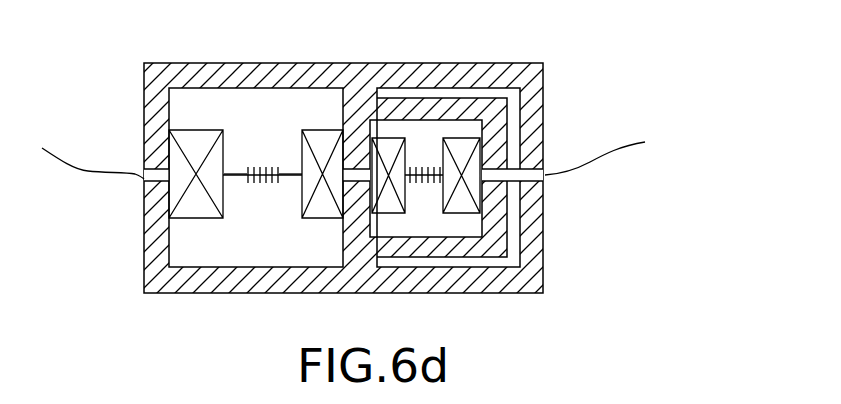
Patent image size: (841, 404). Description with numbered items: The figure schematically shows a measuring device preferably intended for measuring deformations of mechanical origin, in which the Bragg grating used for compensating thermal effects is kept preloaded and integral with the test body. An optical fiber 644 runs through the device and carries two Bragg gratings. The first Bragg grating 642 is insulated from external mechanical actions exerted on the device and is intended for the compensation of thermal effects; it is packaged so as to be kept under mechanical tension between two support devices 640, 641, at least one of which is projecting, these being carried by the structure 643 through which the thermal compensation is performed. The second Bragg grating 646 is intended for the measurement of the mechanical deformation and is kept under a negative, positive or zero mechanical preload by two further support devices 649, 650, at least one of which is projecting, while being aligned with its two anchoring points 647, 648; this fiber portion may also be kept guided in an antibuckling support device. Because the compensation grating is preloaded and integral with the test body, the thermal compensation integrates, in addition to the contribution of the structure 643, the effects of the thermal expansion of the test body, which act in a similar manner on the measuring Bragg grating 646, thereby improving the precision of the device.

The support device 640 is at (390, 147).
The support device 641 is at (461, 204).
The Bragg grating 642 is at (422, 184).
The structure 643 is at (440, 110).
The optical fiber 644 is at (66, 159).
The Bragg grating 646 is at (261, 165).
The anchoring point 647 is at (237, 177).
The anchoring point 648 is at (293, 177).
The support device 649 is at (195, 204).
The support device 650 is at (323, 204).